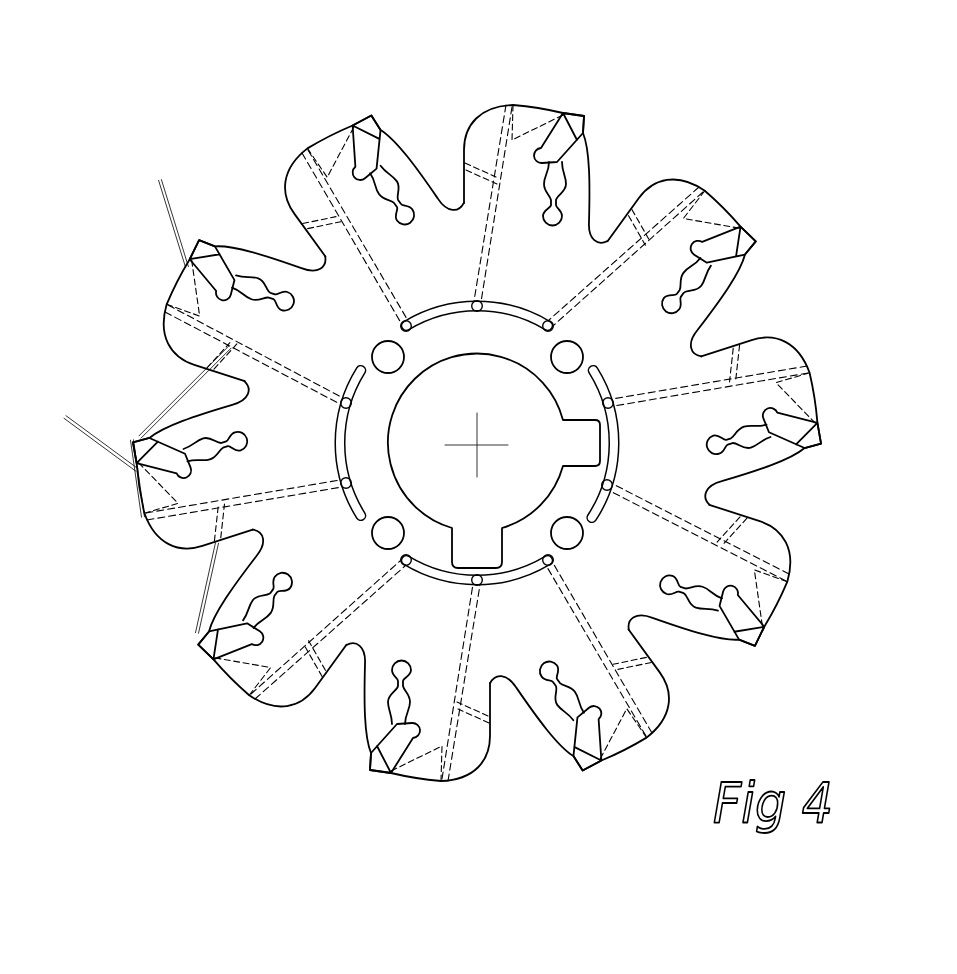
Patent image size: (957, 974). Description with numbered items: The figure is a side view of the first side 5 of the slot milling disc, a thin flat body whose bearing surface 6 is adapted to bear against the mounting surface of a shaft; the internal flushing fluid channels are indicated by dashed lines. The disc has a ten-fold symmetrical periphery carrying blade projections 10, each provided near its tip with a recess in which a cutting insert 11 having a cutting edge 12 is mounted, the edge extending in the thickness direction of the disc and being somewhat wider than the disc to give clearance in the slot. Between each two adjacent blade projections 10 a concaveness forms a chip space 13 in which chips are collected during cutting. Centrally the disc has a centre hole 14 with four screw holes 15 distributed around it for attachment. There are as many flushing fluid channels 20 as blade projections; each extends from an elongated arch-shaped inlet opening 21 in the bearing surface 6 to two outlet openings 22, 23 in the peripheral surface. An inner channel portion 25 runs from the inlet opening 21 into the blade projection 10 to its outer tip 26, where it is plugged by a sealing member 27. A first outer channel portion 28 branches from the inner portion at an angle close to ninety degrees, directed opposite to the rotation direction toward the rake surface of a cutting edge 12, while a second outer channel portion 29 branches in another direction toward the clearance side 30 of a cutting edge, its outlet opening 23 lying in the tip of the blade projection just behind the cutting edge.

The first side 5 is at (647, 348).
The bearing surface 6 is at (585, 488).
The blade projection 10 is at (481, 145).
The cutting insert 11 is at (578, 104).
The cutting edge 12 is at (132, 446).
The chip space 13 is at (258, 218).
The centre hole 14 is at (496, 380).
The screw hole 15 is at (383, 353).
The flushing fluid channel 20 is at (358, 603).
The inlet opening 21 is at (515, 580).
The outlet opening 22 is at (323, 673).
The outlet opening 23 is at (210, 672).
The inner channel portion 25 is at (340, 630).
The outer tip 26 is at (632, 757).
The sealing member 27 is at (256, 692).
The first outer channel portion 28 is at (305, 663).
The second outer channel portion 29 is at (272, 663).
The clearance side 30 is at (748, 230).